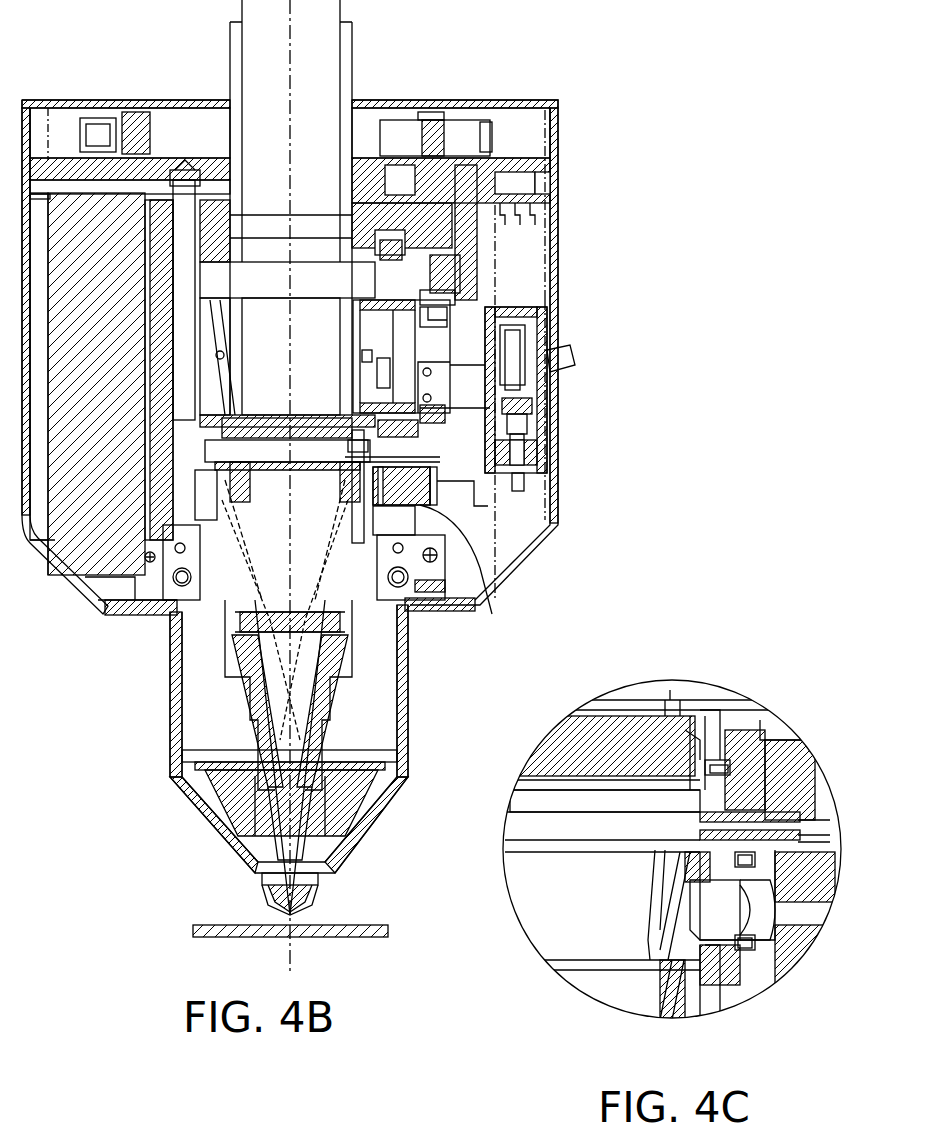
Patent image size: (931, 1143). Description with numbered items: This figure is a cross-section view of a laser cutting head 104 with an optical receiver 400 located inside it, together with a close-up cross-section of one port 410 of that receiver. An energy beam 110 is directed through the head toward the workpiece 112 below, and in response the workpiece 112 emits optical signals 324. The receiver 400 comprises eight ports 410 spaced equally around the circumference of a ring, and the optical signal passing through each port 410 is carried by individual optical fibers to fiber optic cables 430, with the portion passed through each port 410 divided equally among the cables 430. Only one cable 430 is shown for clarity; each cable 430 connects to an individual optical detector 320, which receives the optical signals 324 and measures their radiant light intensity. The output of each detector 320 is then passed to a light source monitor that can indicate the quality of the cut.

In FIG. 4B, the laser cutting head 104 is at (588, 152).
In FIG. 4B, the energy beam 110 is at (285, 598).
In FIG. 4B, the workpiece 112 is at (250, 937).
In FIG. 4B, the optical detector 320 is at (540, 425).
In FIG. 4B, the optical signals 324 is at (362, 588).
In FIG. 4B, the receiver 400 is at (440, 508).
In FIG. 4C, the port 410 is at (668, 925).
In FIG. 4B, the fiber optic cable 430 is at (512, 486).